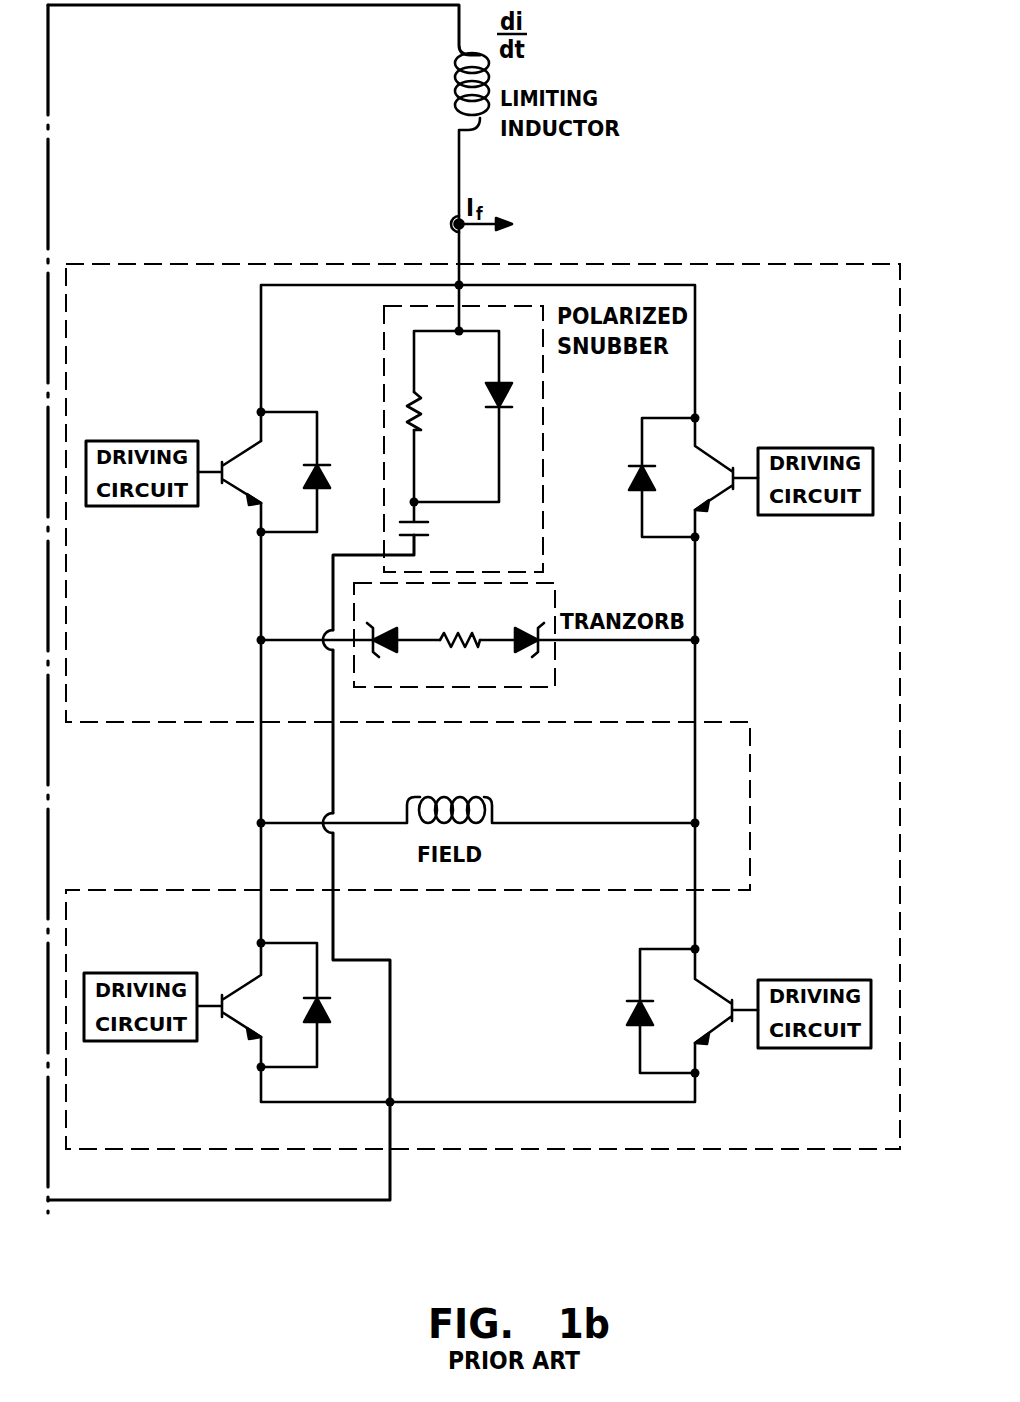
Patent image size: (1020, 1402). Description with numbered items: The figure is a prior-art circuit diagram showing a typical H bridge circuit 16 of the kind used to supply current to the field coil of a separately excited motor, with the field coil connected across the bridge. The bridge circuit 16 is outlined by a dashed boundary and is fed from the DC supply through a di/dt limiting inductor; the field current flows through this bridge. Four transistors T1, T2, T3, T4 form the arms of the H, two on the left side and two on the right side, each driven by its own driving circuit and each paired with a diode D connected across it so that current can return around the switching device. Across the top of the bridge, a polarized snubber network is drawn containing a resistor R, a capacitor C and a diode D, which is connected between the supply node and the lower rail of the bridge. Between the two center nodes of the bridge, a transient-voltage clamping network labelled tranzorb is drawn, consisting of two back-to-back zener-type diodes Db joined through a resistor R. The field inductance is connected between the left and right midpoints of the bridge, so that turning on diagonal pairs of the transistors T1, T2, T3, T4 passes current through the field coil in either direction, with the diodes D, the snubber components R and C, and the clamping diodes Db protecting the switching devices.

The H bridge circuit 16 is at (713, 264).
The transistor T1 is at (239, 473).
The transistor T2 is at (714, 477).
The transistor T3 is at (239, 991).
The transistor T4 is at (712, 1011).
The diode D is at (478, 728).
The resistor R is at (443, 519).
The capacitor C is at (423, 523).
The zener diode Db is at (455, 624).